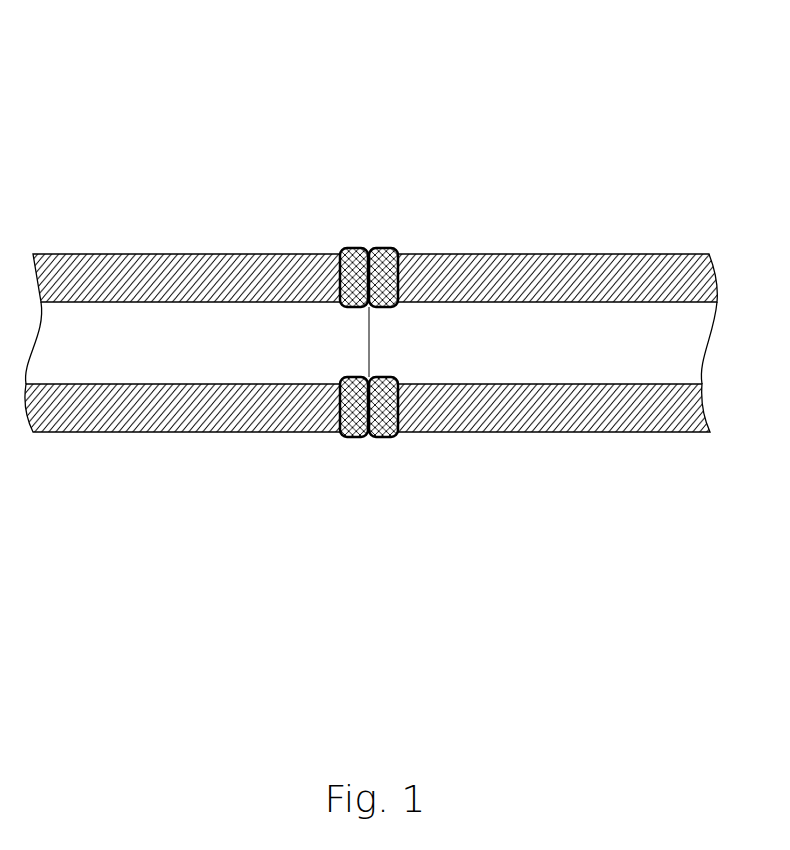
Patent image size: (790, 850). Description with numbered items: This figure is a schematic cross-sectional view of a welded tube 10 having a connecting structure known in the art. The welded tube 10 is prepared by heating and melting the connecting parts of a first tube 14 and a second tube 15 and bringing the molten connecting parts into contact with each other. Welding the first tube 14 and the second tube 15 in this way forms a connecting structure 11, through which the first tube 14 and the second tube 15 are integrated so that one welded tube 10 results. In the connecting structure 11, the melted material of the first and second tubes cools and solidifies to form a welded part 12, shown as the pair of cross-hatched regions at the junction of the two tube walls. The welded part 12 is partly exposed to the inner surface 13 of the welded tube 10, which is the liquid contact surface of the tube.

The welded tube 10 is at (556, 140).
The connecting structure 11 is at (351, 228).
The welded part 12 is at (383, 248).
The inner surface 13 is at (217, 268).
The first tube 14 is at (116, 276).
The second tube 15 is at (600, 277).